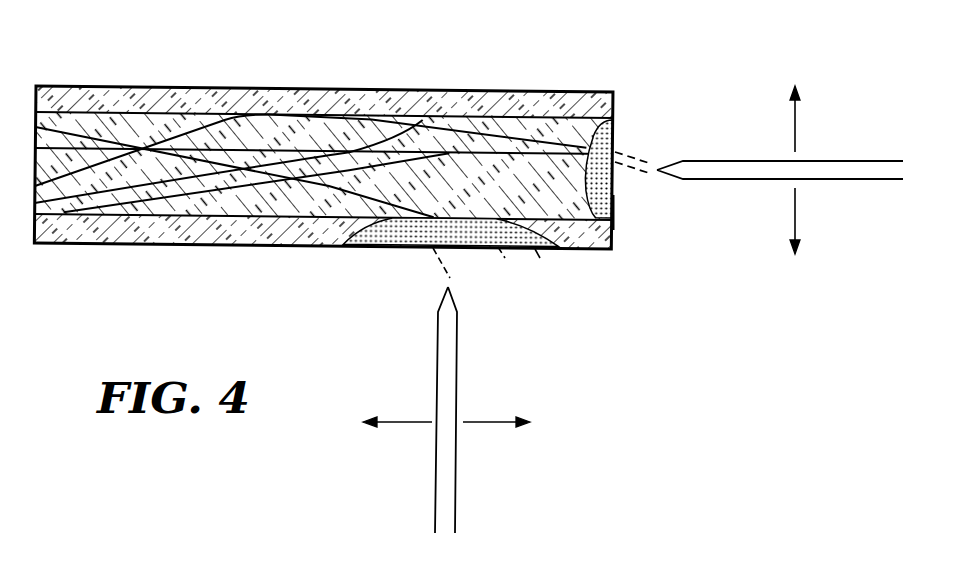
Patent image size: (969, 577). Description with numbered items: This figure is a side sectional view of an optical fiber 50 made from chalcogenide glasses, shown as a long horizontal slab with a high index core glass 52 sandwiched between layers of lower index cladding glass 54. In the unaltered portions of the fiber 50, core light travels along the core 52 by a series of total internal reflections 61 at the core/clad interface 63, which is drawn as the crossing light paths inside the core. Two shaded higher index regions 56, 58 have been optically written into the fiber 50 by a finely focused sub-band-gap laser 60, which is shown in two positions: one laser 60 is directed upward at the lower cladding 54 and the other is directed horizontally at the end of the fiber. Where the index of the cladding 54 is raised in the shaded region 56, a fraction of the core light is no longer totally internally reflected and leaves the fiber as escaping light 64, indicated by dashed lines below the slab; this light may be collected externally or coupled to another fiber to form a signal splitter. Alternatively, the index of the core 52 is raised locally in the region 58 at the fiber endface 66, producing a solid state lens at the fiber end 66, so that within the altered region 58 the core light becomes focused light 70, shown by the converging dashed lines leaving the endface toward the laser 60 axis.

The optical fiber 50 is at (257, 67).
The core glass 52 is at (483, 124).
The cladding glass 54 is at (548, 92).
The higher index region 56 is at (537, 250).
The higher index region 58 is at (603, 250).
The sub-band-gap laser 60 is at (753, 163).
The total internal reflections 61 is at (372, 118).
The core/clad interface 63 is at (290, 118).
The escaping light 64 is at (440, 263).
The fiber endface 66 is at (615, 199).
The focused light 70 is at (633, 152).